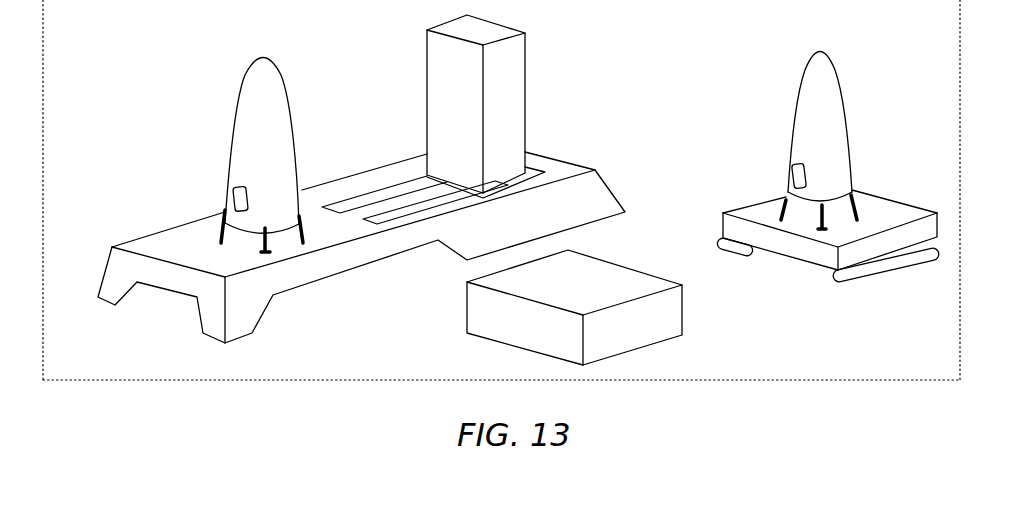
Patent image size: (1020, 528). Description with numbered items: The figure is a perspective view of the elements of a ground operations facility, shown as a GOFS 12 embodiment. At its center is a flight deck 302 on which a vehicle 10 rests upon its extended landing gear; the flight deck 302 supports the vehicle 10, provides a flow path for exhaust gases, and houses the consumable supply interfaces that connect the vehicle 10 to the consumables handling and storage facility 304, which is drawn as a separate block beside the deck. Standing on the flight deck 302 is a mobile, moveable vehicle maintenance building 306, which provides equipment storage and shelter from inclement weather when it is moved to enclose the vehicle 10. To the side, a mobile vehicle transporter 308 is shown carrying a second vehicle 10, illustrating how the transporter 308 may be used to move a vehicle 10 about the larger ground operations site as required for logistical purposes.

The vehicle 10 is at (237, 108).
The GOFS 12 is at (158, 222).
The flight deck 302 is at (213, 255).
The consumables handling and storage facility 304 is at (563, 288).
The vehicle maintenance building 306 is at (467, 87).
The mobile vehicle transporter 308 is at (690, 212).